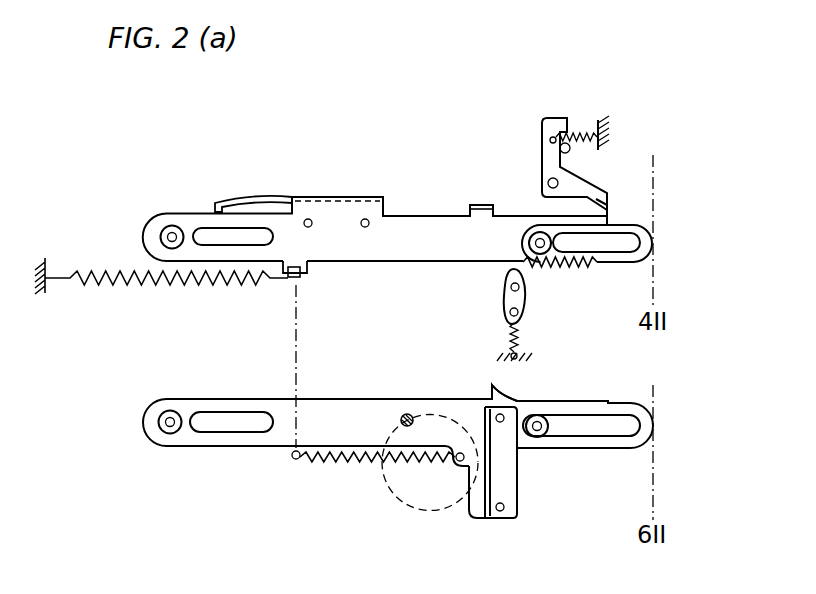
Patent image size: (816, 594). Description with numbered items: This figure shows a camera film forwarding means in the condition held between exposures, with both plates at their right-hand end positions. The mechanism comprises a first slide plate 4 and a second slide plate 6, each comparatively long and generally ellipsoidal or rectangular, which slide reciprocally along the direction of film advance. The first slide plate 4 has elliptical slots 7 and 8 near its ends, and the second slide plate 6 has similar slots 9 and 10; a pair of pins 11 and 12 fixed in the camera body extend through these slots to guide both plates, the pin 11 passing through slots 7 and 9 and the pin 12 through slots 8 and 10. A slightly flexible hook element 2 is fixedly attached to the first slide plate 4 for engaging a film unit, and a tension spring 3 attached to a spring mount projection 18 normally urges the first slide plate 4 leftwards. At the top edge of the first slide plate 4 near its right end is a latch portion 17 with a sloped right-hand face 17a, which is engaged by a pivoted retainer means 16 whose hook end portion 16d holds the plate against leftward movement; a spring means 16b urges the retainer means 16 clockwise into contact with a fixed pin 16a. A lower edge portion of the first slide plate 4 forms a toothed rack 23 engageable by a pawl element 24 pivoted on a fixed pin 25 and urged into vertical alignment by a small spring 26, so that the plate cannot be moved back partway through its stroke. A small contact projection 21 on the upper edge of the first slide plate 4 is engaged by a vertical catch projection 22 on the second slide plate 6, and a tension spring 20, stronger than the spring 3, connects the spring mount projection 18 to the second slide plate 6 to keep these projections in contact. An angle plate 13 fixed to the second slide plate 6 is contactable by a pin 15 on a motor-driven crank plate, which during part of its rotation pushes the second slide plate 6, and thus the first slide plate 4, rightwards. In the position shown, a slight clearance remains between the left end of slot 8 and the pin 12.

The hook element 2 is at (250, 197).
The tension spring 3 is at (225, 285).
The first slide plate 4 is at (412, 228).
The second slide plate 6 is at (320, 412).
The elliptical slot 7 is at (195, 241).
The elliptical slot 8 is at (630, 243).
The slot 9 is at (200, 428).
The slot 10 is at (594, 430).
The pin 11 is at (172, 226).
The pin 12 is at (538, 233).
The angle plate 13 is at (490, 488).
The pin 15 is at (407, 414).
The retainer means 16 is at (578, 186).
The fixed pin 16a is at (598, 128).
The spring means 16b is at (570, 135).
The hook end portion 16d is at (607, 196).
The latch portion 17 is at (612, 214).
The sloped right-hand face 17a is at (610, 212).
The spring mount projection 18 is at (300, 280).
The tension spring 20 is at (357, 463).
The contact projection 21 is at (477, 205).
The catch projection 22 is at (500, 386).
The toothed rack 23 is at (577, 270).
The pawl element 24 is at (522, 300).
The fixed pin 25 is at (510, 287).
The small spring 26 is at (510, 342).